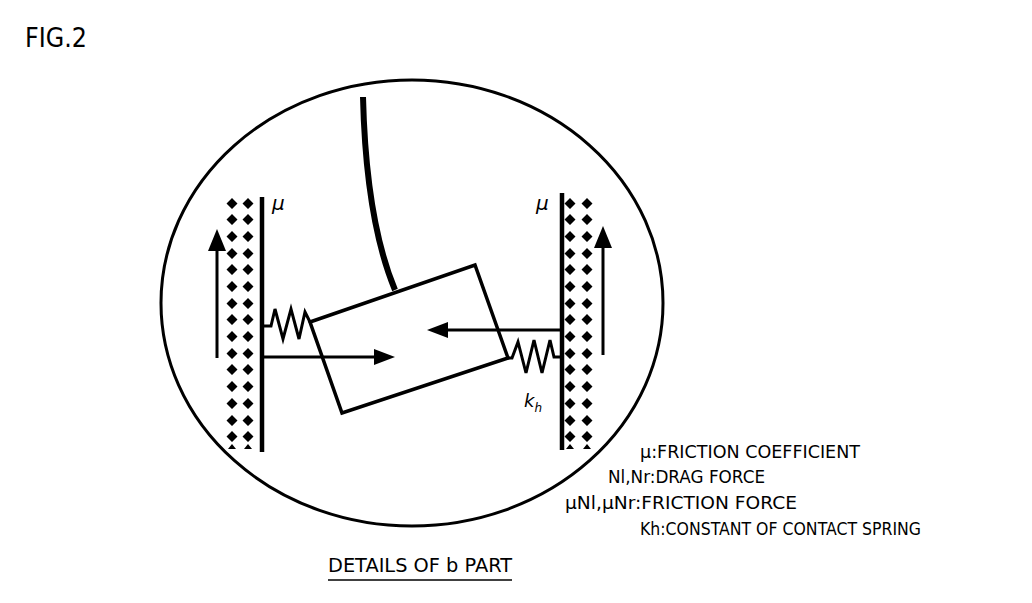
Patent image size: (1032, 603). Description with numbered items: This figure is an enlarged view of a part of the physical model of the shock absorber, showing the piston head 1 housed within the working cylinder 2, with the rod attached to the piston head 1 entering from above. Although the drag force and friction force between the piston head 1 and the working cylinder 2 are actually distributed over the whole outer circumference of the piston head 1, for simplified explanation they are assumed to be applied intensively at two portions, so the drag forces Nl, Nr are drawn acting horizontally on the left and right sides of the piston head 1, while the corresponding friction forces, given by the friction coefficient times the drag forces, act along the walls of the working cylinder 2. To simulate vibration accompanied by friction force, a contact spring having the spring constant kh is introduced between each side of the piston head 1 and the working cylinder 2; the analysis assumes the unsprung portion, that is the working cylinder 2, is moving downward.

The piston head 1 is at (342, 413).
The working cylinder 2 is at (560, 240).
The spring constant of contact spring kh is at (287, 309).
The drag force Nl is at (329, 370).
The drag force Nr is at (494, 319).